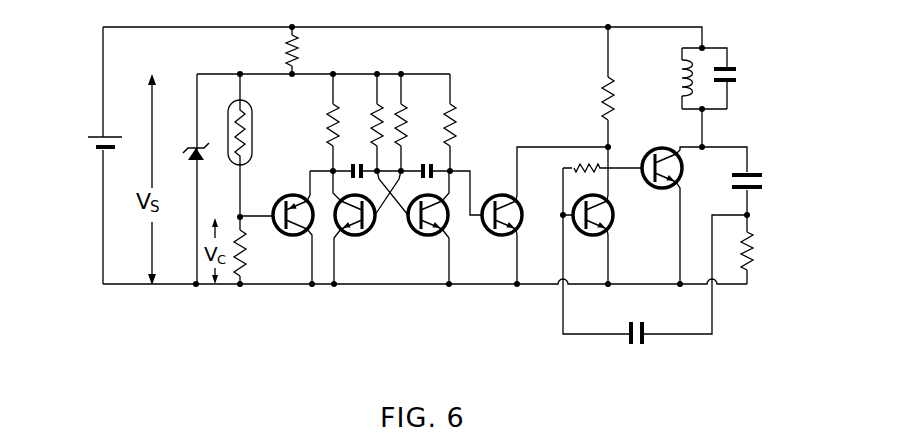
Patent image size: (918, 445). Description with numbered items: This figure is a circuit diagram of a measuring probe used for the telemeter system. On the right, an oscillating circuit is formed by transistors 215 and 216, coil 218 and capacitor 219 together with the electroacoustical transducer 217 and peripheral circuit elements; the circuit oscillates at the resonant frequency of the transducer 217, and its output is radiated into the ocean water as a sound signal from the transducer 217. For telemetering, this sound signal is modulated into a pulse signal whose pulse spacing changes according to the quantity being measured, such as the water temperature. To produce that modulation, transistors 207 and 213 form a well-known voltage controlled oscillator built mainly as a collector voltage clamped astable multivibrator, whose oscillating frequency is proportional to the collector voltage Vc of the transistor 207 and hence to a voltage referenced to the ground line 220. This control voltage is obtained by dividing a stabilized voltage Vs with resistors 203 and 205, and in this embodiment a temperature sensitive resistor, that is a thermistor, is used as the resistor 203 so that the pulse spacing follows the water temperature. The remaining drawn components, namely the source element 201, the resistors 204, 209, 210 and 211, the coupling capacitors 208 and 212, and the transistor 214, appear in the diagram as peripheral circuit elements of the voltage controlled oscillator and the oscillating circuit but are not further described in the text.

The battery 201 is at (91, 136).
The resistor 203 is at (252, 112).
The resistor 204 is at (330, 108).
The resistor 205 is at (290, 237).
The transistor 207 is at (347, 240).
The capacitor 208 is at (349, 165).
The resistor 209 is at (376, 104).
The resistor 210 is at (405, 103).
The resistor 211 is at (456, 110).
The capacitor 212 is at (433, 165).
The transistor 213 is at (414, 240).
The transistor 214 is at (484, 238).
The transistor 215 is at (612, 226).
The transistor 216 is at (683, 172).
The electroacoustical transducer 217 is at (758, 168).
The coil 218 is at (678, 65).
The capacitor 219 is at (740, 69).
The ground line 220 is at (170, 287).